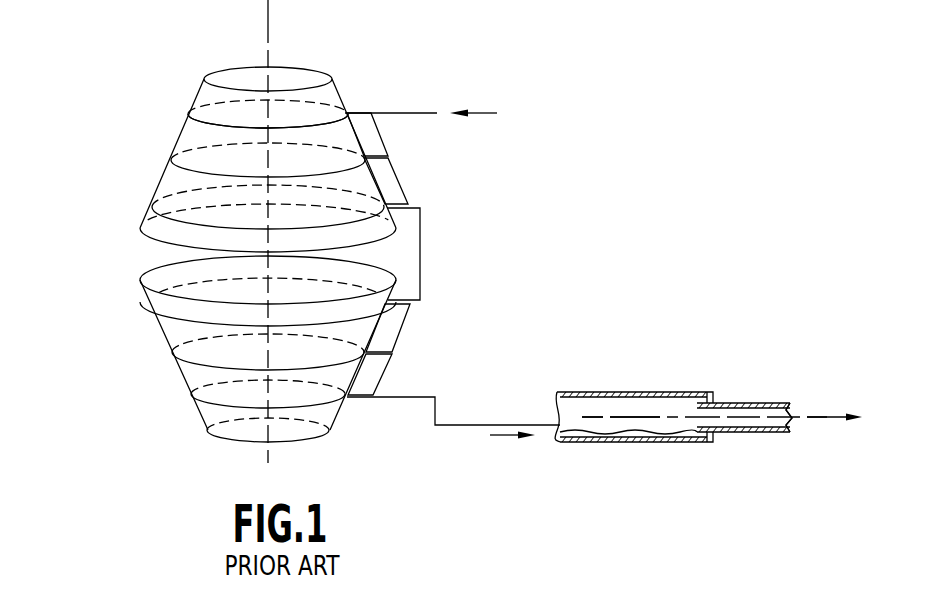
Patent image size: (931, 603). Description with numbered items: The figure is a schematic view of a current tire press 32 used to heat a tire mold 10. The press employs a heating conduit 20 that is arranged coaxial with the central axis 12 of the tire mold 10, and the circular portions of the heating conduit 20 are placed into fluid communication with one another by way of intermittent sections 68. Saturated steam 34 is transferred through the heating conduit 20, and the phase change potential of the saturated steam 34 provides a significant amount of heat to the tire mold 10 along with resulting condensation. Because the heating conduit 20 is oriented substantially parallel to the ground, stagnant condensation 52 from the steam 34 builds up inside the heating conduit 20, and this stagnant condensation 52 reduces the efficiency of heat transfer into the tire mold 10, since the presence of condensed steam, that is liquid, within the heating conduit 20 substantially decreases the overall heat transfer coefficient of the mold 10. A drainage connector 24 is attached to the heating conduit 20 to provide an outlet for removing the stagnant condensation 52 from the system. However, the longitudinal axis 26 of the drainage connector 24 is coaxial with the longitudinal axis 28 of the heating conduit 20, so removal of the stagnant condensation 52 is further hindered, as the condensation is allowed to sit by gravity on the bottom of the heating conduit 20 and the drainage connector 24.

The tire mold 10 is at (175, 278).
The central axis 12 is at (268, 26).
The heating conduit 20 is at (218, 128).
The drainage connector 24 is at (750, 403).
The longitudinal axis 26 is at (748, 418).
The longitudinal axis 28 is at (595, 417).
The tire press 32 is at (134, 158).
The saturated steam 34 is at (481, 113).
The stagnant condensation 52 is at (675, 436).
The intermittent sections 68 is at (383, 135).